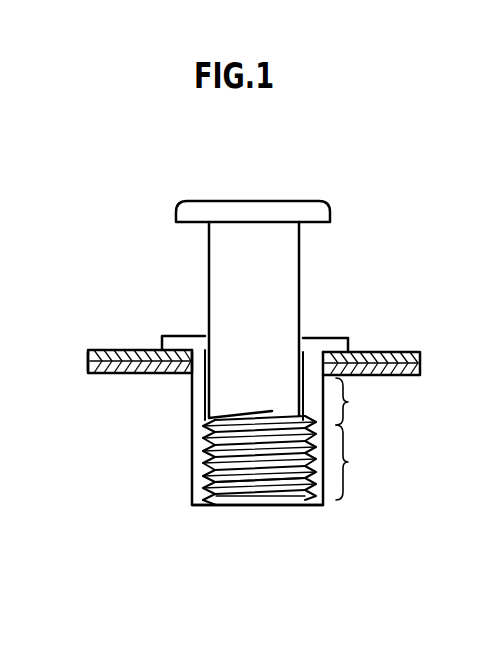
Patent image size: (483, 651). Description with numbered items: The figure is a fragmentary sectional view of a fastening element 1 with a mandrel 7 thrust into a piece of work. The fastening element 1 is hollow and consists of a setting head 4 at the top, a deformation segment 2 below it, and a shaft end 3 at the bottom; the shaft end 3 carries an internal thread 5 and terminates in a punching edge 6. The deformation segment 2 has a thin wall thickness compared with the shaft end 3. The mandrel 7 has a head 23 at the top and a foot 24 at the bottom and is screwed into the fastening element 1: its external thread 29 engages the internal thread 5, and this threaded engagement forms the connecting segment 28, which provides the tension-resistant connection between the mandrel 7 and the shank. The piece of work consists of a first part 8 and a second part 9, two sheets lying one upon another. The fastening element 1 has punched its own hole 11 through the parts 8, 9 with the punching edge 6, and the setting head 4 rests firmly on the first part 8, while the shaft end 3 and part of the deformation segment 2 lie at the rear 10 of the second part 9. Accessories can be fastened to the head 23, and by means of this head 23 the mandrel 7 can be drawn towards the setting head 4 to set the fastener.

The fastening element 1 is at (172, 440).
The deformation segment 2 is at (351, 401).
The shaft end 3 is at (351, 462).
The setting head 4 is at (180, 342).
The internal thread 5 is at (210, 466).
The punching edge 6 is at (197, 506).
The mandrel 7 is at (222, 279).
The first part 8 is at (118, 350).
The second part 9 is at (105, 376).
The rear of the second part 10 is at (400, 392).
The hole 11 is at (187, 378).
The head 23 is at (281, 211).
The foot 24 is at (250, 485).
The connecting segment 28 is at (207, 502).
The external thread 29 is at (292, 500).